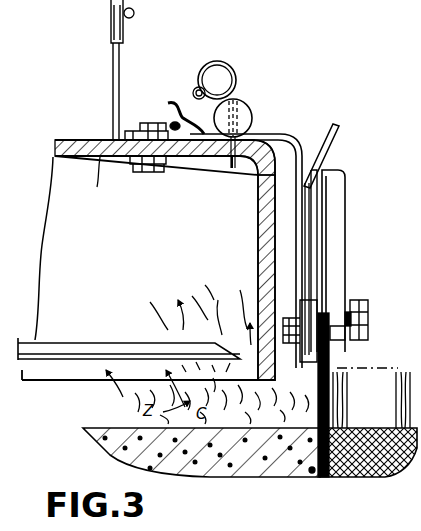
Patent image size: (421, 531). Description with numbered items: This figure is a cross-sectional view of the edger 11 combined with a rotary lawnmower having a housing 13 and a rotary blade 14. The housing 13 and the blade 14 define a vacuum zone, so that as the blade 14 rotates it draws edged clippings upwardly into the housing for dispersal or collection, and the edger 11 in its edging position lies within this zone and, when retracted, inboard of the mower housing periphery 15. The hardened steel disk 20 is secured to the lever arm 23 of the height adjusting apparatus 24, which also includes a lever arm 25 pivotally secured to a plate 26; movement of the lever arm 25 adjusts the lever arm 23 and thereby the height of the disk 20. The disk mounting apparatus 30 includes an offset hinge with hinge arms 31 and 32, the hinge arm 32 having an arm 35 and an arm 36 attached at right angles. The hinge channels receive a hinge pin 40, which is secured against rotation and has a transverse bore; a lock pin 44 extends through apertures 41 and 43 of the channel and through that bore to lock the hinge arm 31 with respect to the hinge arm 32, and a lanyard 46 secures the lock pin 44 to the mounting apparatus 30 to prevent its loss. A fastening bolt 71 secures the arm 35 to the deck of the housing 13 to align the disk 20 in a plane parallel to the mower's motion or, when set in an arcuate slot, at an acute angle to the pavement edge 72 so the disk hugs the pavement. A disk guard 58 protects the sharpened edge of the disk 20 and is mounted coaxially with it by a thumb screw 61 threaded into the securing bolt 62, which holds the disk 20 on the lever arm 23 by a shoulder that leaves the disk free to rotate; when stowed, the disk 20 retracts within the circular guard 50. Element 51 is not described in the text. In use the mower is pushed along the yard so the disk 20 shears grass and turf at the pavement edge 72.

The edger 11 is at (378, 84).
The housing 13 is at (73, 138).
The rotary blade 14 is at (160, 346).
The mower housing periphery 15 is at (274, 235).
The hardened steel disk 20 is at (335, 362).
The lever arm 23 is at (326, 293).
The height adjusting apparatus 24 is at (320, 262).
The lever arm 25 is at (338, 130).
The plate 26 is at (302, 232).
The disk mounting apparatus 30 is at (142, 54).
The hinge arm 31 is at (293, 137).
The hinge arm 32 is at (106, 83).
The arm 35 is at (101, 157).
The arm 36 is at (110, 56).
The hinge pin 40 is at (262, 98).
The aperture 41 is at (250, 97).
The aperture 43 is at (232, 163).
The lock pin 44 is at (238, 98).
The lanyard 46 is at (172, 106).
The circular guard 50 is at (262, 530).
The loop 51 is at (124, 11).
The disk guard 58 is at (350, 177).
The thumb screw 61 is at (358, 318).
The securing bolt 62 is at (355, 341).
The fastening bolt 71 is at (158, 126).
The pavement edge 72 is at (311, 470).